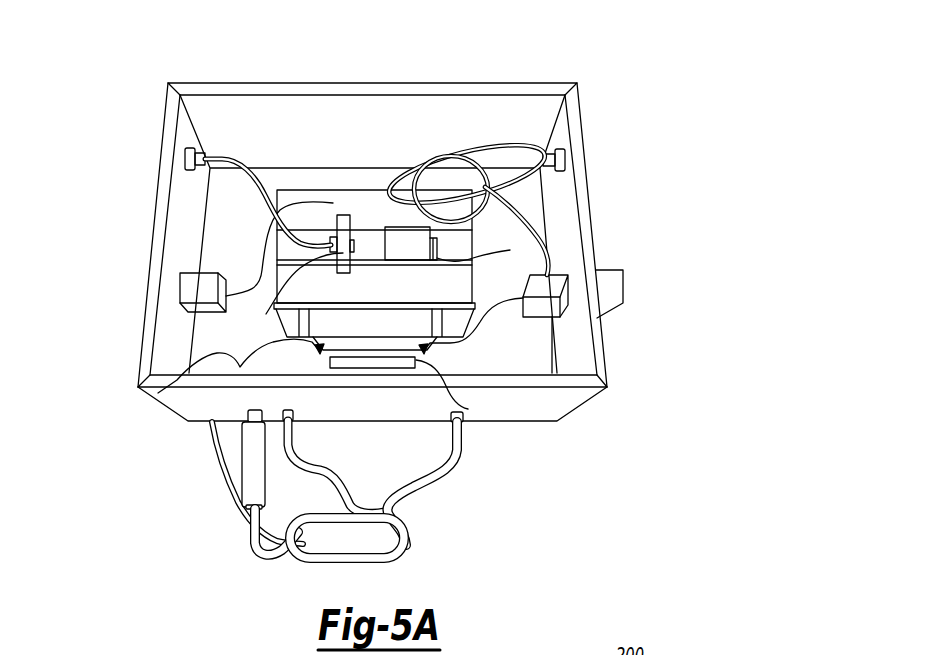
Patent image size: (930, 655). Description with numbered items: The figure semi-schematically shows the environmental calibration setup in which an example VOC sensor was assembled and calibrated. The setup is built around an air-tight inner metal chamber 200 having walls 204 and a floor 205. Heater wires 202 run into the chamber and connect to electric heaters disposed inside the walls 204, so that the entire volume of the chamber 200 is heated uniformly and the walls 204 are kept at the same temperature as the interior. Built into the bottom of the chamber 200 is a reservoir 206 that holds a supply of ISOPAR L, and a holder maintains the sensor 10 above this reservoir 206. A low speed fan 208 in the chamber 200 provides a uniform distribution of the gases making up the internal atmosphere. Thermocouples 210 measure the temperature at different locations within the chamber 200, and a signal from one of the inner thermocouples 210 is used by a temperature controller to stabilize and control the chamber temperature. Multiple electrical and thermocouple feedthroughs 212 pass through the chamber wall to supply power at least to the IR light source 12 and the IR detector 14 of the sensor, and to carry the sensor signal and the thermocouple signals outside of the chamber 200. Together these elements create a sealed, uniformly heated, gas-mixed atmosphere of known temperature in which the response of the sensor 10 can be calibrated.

The inner metal chamber 200 is at (434, 54).
The heater wires 202 is at (325, 436).
The walls 204 is at (185, 133).
The floor 205 is at (276, 179).
The reservoir 206 is at (325, 353).
The low speed fan 208 is at (468, 409).
The thermocouples 210 is at (258, 250).
The electrical and thermocouple feedthroughs 212 is at (193, 157).
The sensor 10 is at (368, 224).
The IR light source 12 is at (425, 244).
The IR detector 14 is at (266, 314).